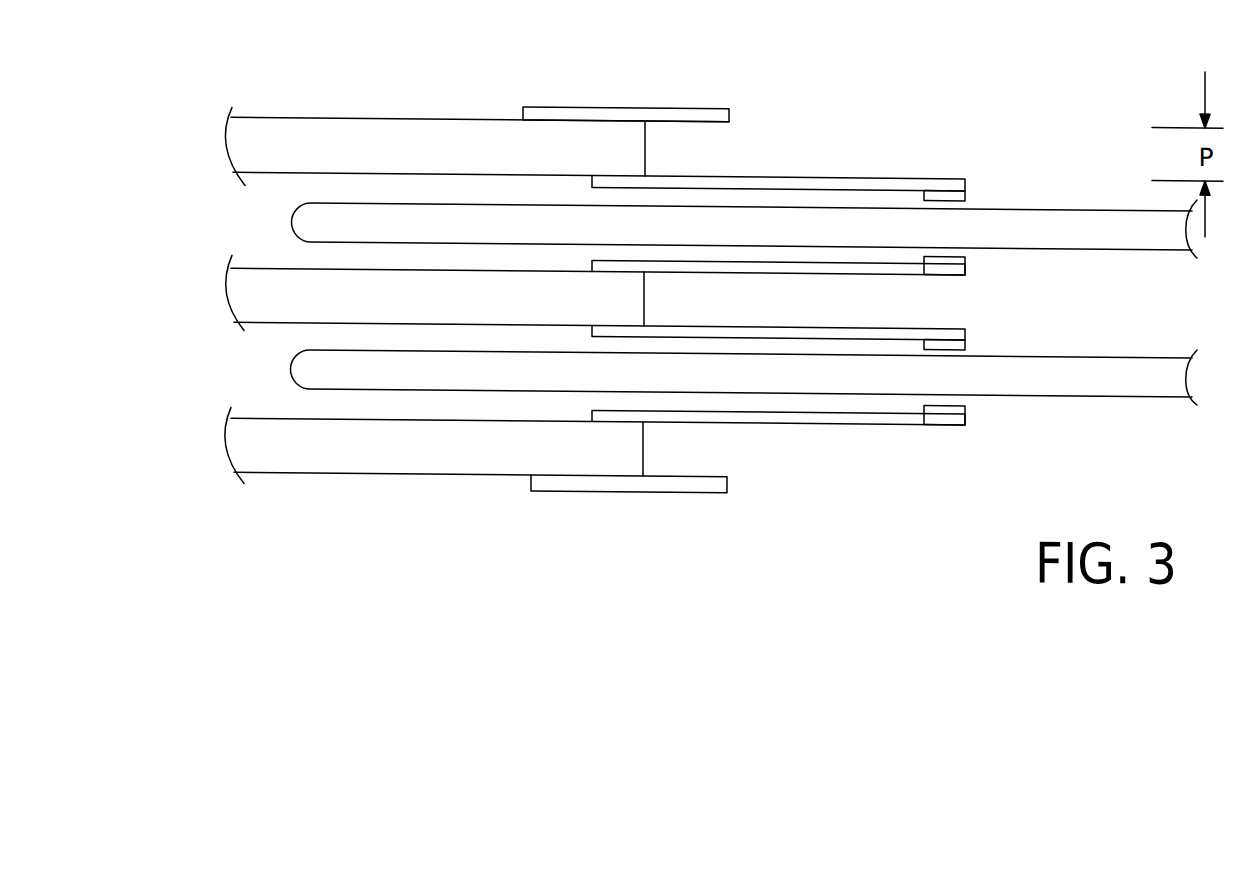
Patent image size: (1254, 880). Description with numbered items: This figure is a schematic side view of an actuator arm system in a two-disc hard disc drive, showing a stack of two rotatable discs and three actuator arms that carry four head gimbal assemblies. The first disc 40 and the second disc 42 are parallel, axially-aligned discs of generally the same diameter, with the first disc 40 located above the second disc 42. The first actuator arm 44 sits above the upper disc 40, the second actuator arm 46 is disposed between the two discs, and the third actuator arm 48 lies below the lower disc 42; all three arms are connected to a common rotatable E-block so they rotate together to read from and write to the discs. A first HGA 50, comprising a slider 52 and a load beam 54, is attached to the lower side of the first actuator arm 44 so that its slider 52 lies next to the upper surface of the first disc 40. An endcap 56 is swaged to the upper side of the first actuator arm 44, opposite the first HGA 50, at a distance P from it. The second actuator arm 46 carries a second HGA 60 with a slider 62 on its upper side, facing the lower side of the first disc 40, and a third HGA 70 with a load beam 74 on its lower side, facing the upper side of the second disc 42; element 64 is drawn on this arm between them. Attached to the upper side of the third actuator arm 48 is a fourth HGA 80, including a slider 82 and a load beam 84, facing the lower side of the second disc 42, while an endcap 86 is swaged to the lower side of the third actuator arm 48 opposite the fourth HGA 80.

The first rotatable disc 40 is at (1075, 206).
The second rotatable disc 42 is at (1145, 353).
The first actuator arm 44 is at (385, 122).
The second actuator arm 46 is at (273, 294).
The third actuator arm 48 is at (393, 449).
The first HGA 50 is at (821, 219).
The slider 52 is at (948, 184).
The load beam 54 is at (742, 176).
The endcap 56 is at (672, 108).
The second HGA 60 is at (821, 292).
The slider 62 is at (965, 261).
The stem 64 is at (703, 272).
The third HGA 70 is at (778, 312).
The load beam 74 is at (745, 325).
The fourth HGA 80 is at (792, 457).
The slider 82 is at (943, 410).
The load beam 84 is at (818, 418).
The endcap 86 is at (660, 492).